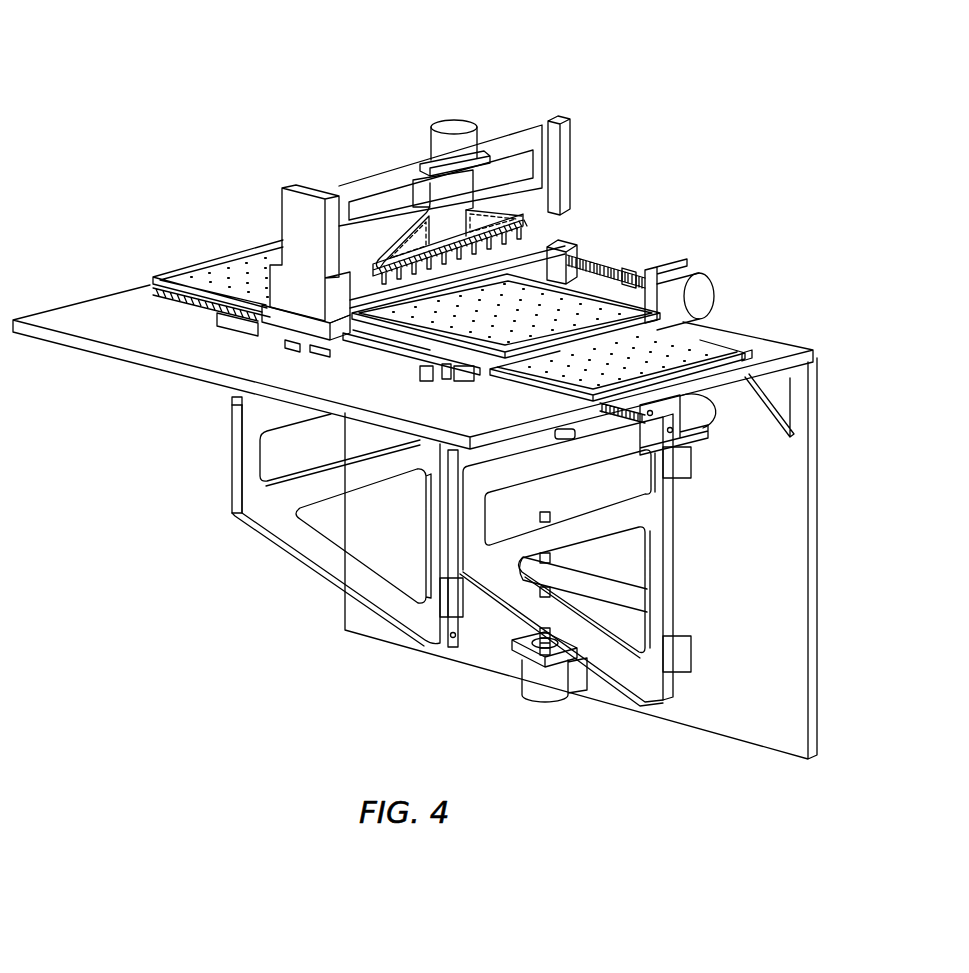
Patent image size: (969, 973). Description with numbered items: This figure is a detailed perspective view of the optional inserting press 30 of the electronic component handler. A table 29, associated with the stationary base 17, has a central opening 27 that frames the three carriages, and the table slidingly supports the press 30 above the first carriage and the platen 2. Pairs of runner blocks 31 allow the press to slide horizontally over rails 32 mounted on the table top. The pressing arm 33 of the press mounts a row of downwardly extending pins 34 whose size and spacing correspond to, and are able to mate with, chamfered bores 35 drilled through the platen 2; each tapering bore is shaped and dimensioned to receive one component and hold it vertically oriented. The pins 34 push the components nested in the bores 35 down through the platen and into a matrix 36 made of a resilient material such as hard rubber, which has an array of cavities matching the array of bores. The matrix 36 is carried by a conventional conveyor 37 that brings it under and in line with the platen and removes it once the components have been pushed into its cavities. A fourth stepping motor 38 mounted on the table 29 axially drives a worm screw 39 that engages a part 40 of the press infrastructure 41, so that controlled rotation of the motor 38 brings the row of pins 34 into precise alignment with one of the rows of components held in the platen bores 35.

The platen 2 is at (550, 282).
The stationary base 17 is at (758, 708).
The central opening 27 is at (448, 368).
The table 29 is at (110, 310).
The press 30 is at (505, 152).
The runner blocks 31 is at (513, 257).
The rails 32 is at (675, 263).
The pressing arm 33 is at (417, 205).
The pins 34 is at (447, 200).
The chamfered bores 35 is at (467, 310).
The matrix 36 is at (238, 272).
The conveyor 37 is at (744, 358).
The fourth stepping motor 38 is at (698, 295).
The worm screw 39 is at (641, 288).
The part of the press infrastructure 40 is at (628, 272).
The press infrastructure 41 is at (300, 212).